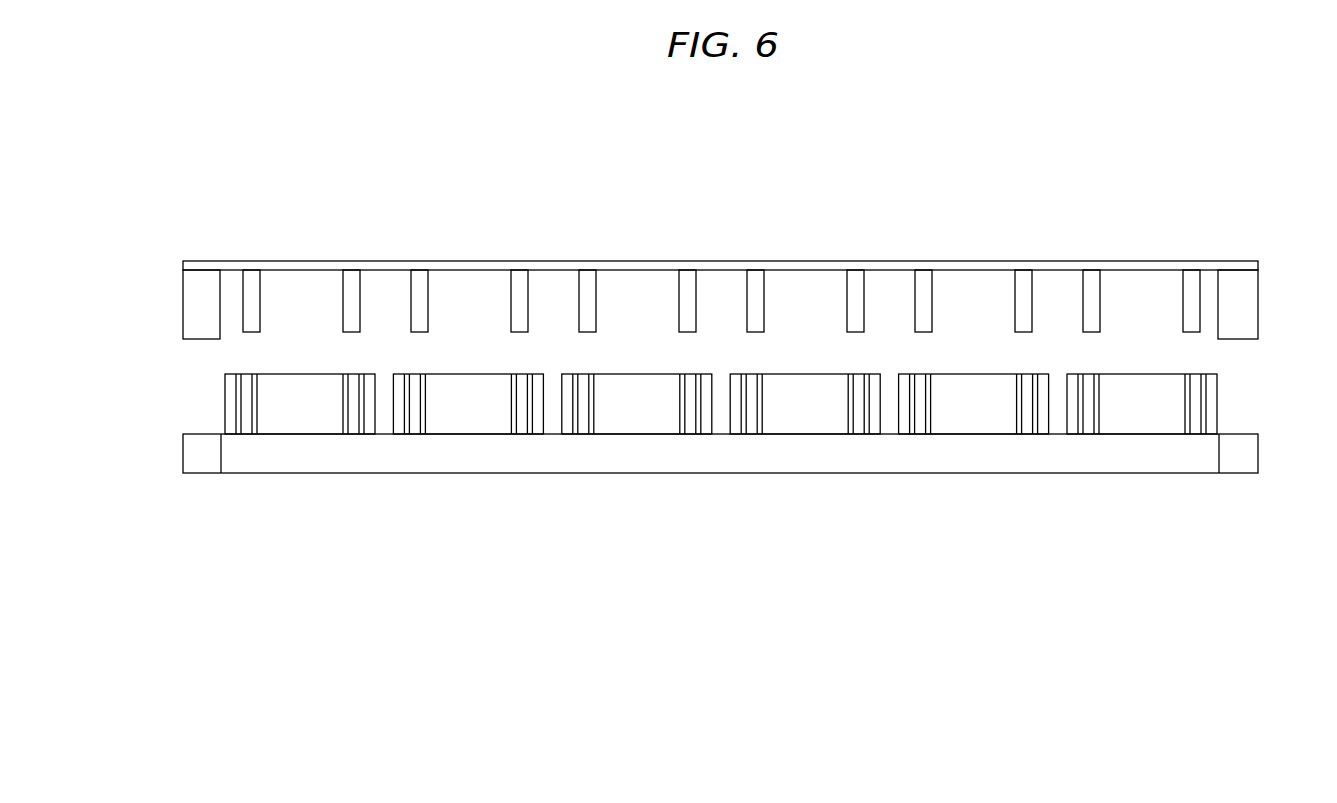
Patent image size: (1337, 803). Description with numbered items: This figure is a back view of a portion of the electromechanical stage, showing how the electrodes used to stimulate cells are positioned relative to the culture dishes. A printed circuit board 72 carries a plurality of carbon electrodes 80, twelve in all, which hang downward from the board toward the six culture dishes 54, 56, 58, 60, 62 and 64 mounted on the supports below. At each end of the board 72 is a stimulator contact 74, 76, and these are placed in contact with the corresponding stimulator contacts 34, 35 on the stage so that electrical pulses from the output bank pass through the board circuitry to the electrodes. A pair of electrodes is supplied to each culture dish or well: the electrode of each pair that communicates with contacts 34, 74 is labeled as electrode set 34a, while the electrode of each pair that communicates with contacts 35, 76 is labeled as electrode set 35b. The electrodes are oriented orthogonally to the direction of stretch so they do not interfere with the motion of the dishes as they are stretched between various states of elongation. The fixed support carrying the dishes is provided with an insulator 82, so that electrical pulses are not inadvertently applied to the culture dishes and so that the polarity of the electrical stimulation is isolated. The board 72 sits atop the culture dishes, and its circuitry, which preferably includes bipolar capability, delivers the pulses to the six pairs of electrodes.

The printed circuit board 72 is at (1211, 240).
The electrodes 80 is at (1199, 222).
The stimulator contact 74 is at (183, 310).
The stimulator contact 76 is at (1258, 308).
The electrode set 34a is at (251, 322).
The electrode set 35b is at (360, 285).
The insulator 82 is at (719, 455).
The stimulator contact 34 is at (188, 455).
The stimulator contact 35 is at (1253, 455).
The culture dish 54 is at (290, 417).
The culture dish 56 is at (458, 417).
The culture dish 58 is at (647, 417).
The culture dish 60 is at (795, 417).
The culture dish 62 is at (984, 417).
The culture dish 64 is at (1132, 417).